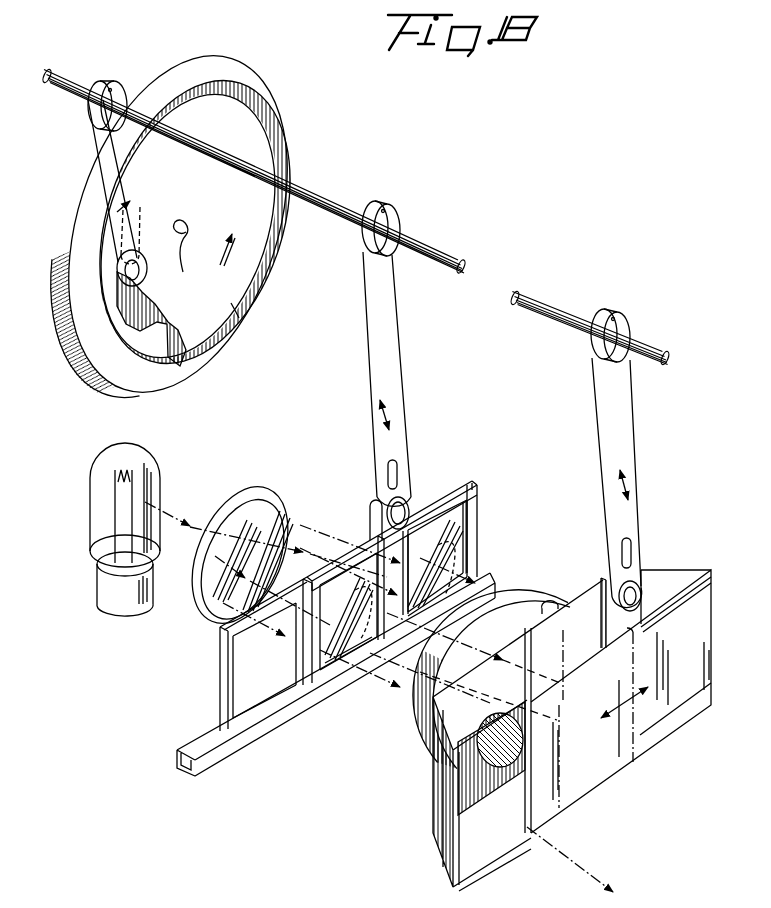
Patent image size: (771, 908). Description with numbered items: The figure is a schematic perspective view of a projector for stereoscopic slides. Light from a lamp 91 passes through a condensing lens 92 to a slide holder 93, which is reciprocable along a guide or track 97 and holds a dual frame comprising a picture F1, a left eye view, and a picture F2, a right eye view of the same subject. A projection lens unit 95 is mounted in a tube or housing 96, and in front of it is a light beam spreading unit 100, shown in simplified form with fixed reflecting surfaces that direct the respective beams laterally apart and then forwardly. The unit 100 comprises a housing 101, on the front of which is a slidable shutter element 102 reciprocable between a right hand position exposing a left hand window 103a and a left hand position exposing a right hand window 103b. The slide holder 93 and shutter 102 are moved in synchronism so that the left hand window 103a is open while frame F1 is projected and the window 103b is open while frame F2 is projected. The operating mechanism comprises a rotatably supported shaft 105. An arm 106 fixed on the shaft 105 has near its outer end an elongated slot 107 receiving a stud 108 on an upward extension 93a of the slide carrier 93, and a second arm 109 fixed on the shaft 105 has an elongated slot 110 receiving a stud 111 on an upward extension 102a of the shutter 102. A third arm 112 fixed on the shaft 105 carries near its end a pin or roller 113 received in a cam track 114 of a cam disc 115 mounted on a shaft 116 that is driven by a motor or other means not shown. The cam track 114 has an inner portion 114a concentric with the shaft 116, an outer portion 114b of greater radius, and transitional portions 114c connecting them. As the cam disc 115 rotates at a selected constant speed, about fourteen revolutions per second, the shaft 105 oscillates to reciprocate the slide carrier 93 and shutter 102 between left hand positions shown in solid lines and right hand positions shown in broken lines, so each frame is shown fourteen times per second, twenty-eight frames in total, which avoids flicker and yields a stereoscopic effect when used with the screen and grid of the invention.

The lamp 91 is at (152, 463).
The condensing lens 92 is at (257, 493).
The slide holder 93 is at (455, 495).
The upward extension of the slide carrier 93a is at (370, 522).
The projection lens unit 95 is at (500, 768).
The tube or housing 96 is at (413, 727).
The guide or track 97 is at (200, 773).
The light beam spreading unit 100 is at (432, 792).
The housing 101 is at (673, 571).
The slidable shutter element 102 is at (610, 758).
The upward extension of the reciprocable shutter 102a is at (550, 603).
The left hand window 103a is at (633, 714).
The right hand window 103b is at (517, 834).
The shaft 105 is at (531, 290).
The arm 106 is at (390, 357).
The elongated slot 107 is at (390, 473).
The stud 108 is at (401, 497).
The second arm 109 is at (630, 416).
The elongated slot 110 is at (629, 546).
The stud 111 is at (636, 596).
The third arm 112 is at (108, 152).
The pin or roller 113 is at (120, 272).
The cam track 114 is at (273, 119).
The inner portion of the cam track 114a is at (118, 316).
The portion of the cam track 114b is at (231, 303).
The transitional portions 114c is at (200, 123).
The cam disc 115 is at (228, 77).
The shaft 116 is at (184, 266).
The picture F1 is at (456, 552).
The picture F2 is at (345, 640).